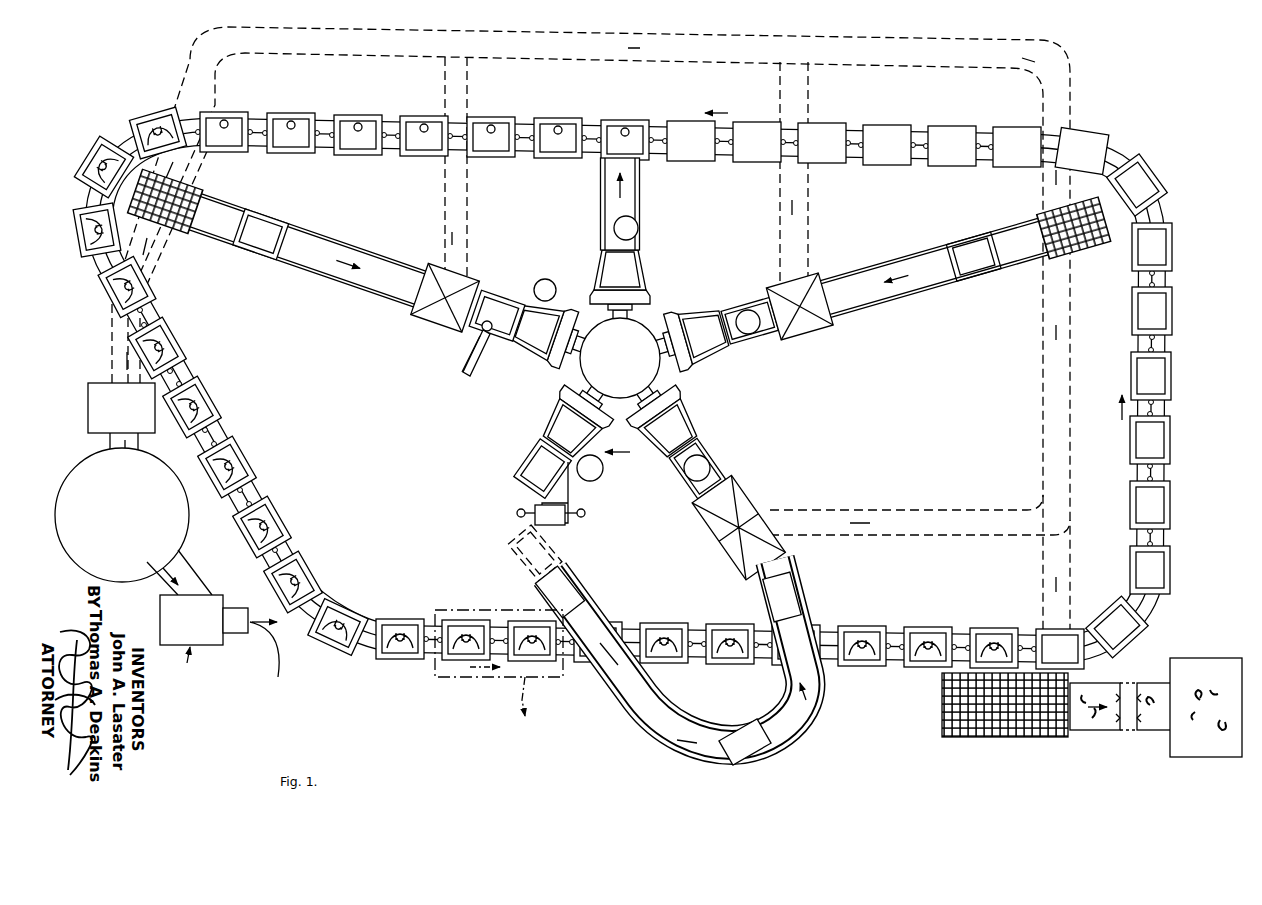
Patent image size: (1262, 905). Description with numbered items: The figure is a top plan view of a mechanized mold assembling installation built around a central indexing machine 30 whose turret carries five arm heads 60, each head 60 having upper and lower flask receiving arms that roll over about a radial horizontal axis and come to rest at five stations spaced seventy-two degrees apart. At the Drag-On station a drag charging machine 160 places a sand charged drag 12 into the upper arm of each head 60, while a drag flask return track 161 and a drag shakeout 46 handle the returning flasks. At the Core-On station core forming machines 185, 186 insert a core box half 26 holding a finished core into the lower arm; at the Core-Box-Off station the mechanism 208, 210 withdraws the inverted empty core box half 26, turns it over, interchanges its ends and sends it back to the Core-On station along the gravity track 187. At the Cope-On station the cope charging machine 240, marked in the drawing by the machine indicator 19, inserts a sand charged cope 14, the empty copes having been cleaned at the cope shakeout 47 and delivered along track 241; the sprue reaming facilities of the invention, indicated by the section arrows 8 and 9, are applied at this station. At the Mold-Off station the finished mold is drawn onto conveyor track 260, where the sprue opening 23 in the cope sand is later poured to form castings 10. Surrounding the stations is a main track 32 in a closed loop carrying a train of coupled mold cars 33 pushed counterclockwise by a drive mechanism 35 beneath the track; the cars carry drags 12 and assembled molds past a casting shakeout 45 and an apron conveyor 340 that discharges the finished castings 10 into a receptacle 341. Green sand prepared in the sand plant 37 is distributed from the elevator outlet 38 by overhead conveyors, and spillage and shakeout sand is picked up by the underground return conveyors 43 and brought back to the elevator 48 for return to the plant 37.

The section arrows 8-8 at sprue reamer 8 is at (482, 288).
The section arrows 9-9 at cope charging machine 9 is at (437, 323).
The casting 10 is at (103, 248).
The drag 12 is at (220, 415).
The cope 14 is at (273, 246).
The cope charging machine 19 is at (423, 323).
The sprue opening 23 is at (228, 122).
The core box half 26 is at (570, 608).
The central indexing machine 30 is at (610, 368).
The main track 32 is at (330, 124).
The mold cars 33 is at (792, 125).
The drive mechanism 35 is at (517, 608).
The sand plant 37 is at (68, 553).
The elevator outlet 38 is at (239, 633).
The underground return conveyors 43 is at (377, 26).
The casting shakeout 45 is at (942, 706).
The drag shakeout 46 is at (1017, 198).
The cope shakeout 47 is at (185, 240).
The elevator 48 is at (88, 407).
The arm heads 60 is at (672, 416).
The drag charging machine 160 is at (797, 337).
The drag flask return conveyor 161 is at (930, 290).
The core forming machine 185 is at (740, 567).
The core forming machine 186 is at (707, 520).
The gravity track 187 is at (757, 593).
The core box off mechanism 208 is at (518, 455).
The core box off mechanism 210 is at (553, 527).
The cope charging machine 240 is at (440, 272).
The track 241 is at (320, 280).
The conveyor track 260 is at (567, 200).
The apron conveyor 340 is at (1145, 747).
The finished castings receptacle 341 is at (1206, 758).